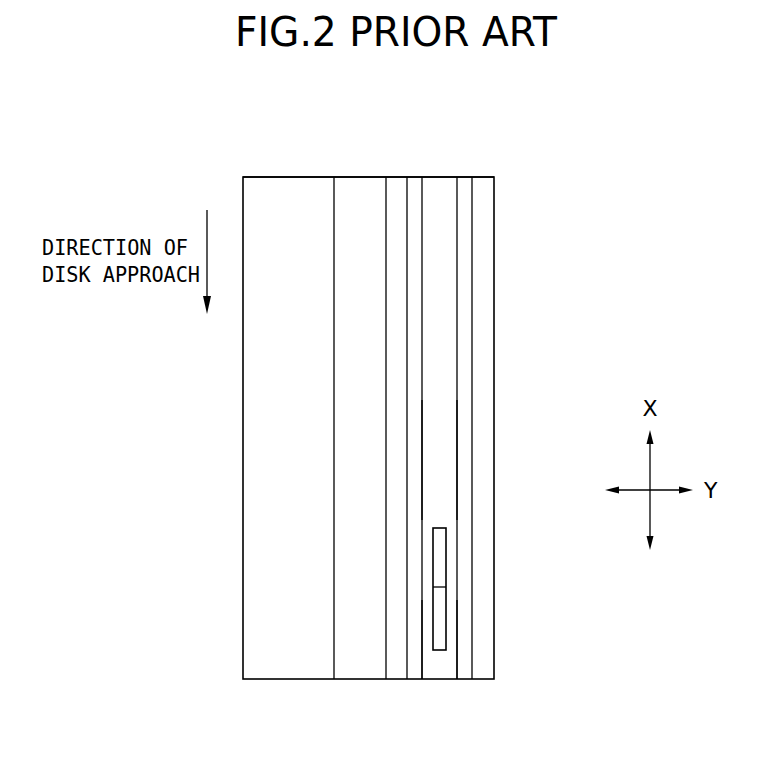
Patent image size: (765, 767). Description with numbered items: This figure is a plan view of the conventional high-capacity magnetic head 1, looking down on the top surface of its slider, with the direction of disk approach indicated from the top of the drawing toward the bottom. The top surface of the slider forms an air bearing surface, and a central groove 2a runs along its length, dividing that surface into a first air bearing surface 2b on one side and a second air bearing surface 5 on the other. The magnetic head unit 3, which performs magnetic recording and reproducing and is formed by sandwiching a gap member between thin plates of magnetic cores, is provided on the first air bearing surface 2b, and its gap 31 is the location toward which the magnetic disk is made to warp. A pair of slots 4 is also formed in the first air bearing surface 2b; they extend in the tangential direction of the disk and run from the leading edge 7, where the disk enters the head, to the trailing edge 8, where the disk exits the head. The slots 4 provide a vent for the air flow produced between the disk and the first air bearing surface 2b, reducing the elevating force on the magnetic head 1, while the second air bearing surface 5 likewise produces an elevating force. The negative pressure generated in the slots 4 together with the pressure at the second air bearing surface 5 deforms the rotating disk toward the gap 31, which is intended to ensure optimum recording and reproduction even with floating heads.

The magnetic head 1 is at (532, 257).
The leading edge 7 is at (362, 177).
The second air bearing surface 5 is at (262, 579).
The central groove 2a is at (368, 673).
The first air bearing surface 2b is at (438, 459).
The slots 4 is at (417, 673).
The trailing edge 8 is at (439, 673).
The magnetic head unit 3 is at (460, 604).
The gap 31 is at (439, 587).